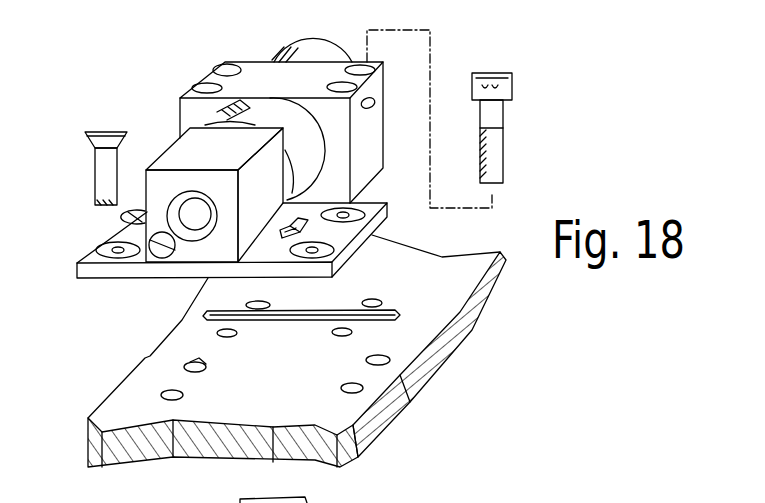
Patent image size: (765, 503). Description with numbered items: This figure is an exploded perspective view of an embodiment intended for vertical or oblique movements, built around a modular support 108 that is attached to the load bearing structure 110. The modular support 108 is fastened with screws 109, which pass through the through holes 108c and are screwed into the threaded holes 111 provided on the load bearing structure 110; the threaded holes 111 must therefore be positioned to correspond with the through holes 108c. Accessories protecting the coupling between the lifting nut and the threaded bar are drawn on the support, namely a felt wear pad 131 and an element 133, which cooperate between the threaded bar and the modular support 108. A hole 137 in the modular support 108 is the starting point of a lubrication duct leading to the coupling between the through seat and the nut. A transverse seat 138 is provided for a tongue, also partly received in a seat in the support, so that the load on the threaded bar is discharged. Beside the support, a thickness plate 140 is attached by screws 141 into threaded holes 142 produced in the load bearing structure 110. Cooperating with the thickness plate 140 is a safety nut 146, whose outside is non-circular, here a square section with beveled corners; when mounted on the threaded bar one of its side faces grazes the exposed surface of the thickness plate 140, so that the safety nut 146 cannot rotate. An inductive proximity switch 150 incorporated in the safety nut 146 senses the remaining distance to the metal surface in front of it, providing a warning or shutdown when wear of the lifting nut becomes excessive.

The modular support 108 is at (384, 168).
The through holes 108c is at (217, 66).
The felt wear pad 131 is at (314, 50).
The element 133 is at (245, 105).
The hole 137 is at (377, 102).
The screws 109 is at (497, 148).
The safety nut 146 is at (172, 157).
The screws 141 is at (106, 173).
The inductive proximity switch 150 is at (132, 213).
The thickness plate 140 is at (148, 270).
The transverse seat 138 is at (350, 305).
The threaded holes 111 is at (318, 338).
The threaded holes 142 is at (183, 389).
The load bearing structure 110 is at (417, 383).